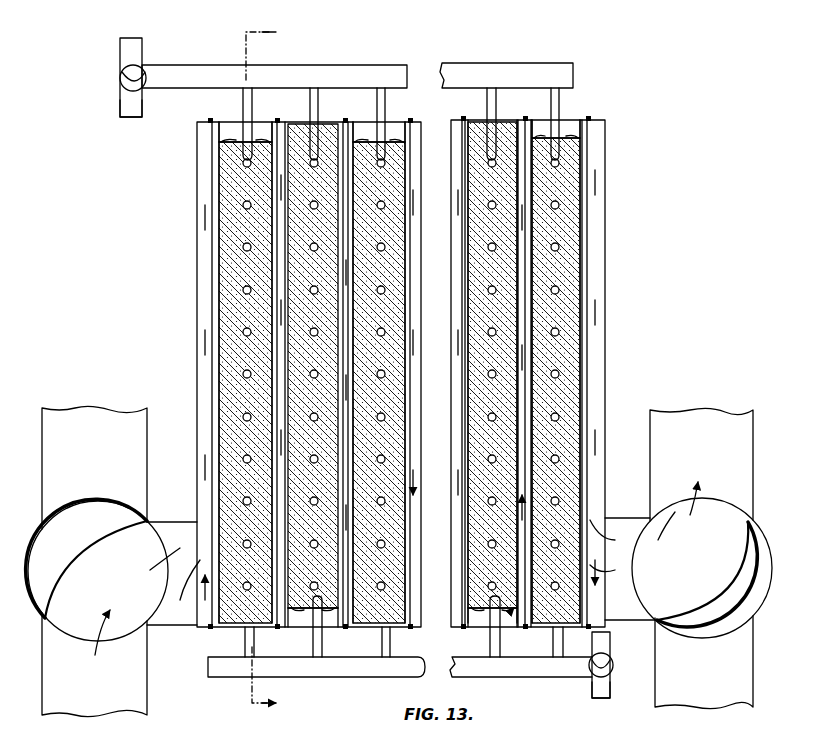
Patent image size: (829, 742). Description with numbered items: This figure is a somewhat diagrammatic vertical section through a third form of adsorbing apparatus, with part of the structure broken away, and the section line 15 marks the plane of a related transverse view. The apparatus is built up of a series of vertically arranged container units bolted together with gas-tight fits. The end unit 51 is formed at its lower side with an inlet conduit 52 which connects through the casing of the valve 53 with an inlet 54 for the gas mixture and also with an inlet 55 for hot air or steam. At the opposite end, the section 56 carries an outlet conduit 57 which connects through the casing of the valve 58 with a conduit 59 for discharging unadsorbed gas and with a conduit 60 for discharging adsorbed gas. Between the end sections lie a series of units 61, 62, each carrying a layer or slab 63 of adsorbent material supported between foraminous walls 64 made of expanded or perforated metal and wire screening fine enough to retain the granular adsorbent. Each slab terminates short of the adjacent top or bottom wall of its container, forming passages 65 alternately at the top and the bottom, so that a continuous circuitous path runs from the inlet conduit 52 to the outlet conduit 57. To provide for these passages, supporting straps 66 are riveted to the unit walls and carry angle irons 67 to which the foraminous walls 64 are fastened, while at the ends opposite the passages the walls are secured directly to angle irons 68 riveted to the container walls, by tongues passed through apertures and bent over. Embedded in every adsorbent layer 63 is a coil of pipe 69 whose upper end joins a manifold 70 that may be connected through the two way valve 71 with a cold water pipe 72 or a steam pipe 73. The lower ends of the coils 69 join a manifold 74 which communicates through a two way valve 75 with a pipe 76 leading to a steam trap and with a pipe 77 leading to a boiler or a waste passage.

The section line 15 is at (267, 371).
The end unit 51 is at (197, 308).
The inlet conduit 52 is at (172, 527).
The valve 53 is at (38, 588).
The inlet 54 is at (48, 712).
The inlet 55 is at (45, 477).
The section 56 is at (605, 305).
The outlet conduit 57 is at (622, 526).
The valve 58 is at (760, 545).
The conduit 59 is at (748, 444).
The conduit 60 is at (750, 676).
The unit 61 is at (328, 126).
The unit 62 is at (274, 128).
The layer or slab of adsorbent material 63 is at (297, 126).
The foraminous walls 64 is at (220, 234).
The passages 65 is at (232, 130).
The supporting straps 66 is at (232, 136).
The angle irons 67 is at (216, 143).
The angle irons 68 is at (280, 125).
The coil of pipe 69 is at (243, 374).
The manifold 70 is at (213, 65).
The two way valve 71 is at (120, 78).
The cold water pipe 72 is at (122, 45).
The steam pipe 73 is at (124, 110).
The manifold 74 is at (347, 677).
The two way valve 75 is at (612, 666).
The pipe 76 is at (605, 643).
The pipe 77 is at (610, 690).